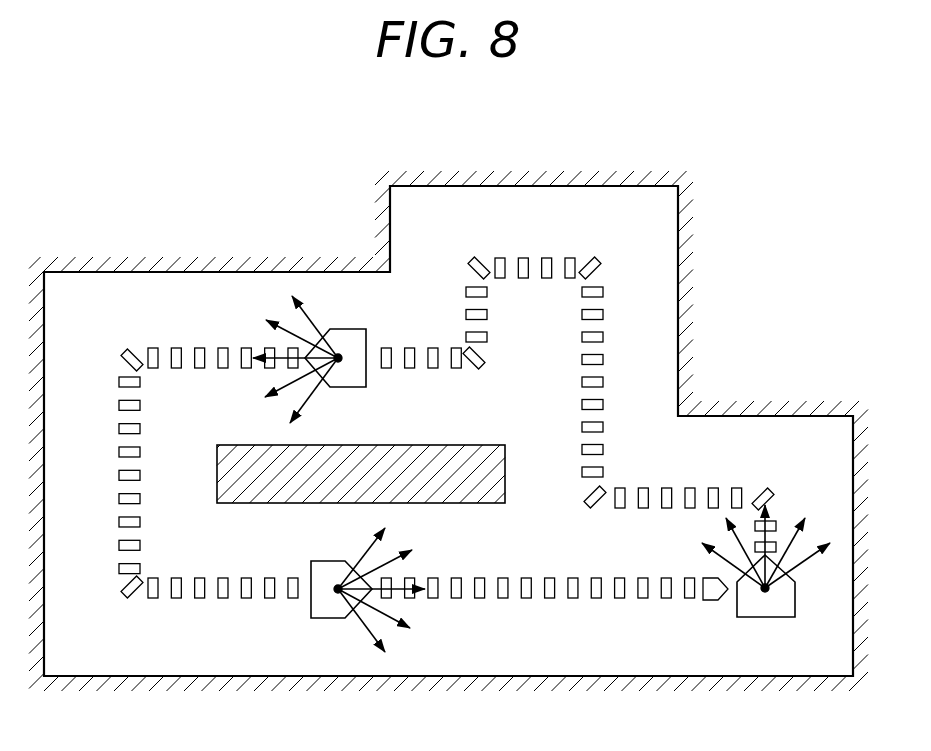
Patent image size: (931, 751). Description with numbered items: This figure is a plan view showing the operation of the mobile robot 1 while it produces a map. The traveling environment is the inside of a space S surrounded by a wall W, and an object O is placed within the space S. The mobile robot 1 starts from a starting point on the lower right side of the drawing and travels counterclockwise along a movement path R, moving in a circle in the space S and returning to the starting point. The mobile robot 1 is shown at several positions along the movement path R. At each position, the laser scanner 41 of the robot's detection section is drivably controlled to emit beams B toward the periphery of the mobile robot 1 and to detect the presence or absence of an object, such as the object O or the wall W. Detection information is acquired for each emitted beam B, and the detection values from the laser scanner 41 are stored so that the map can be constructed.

The mobile robot 1 is at (355, 329).
The laser scanner 41 is at (342, 360).
The beam B is at (312, 400).
The object O is at (468, 445).
The space S is at (648, 366).
The movement path R is at (604, 448).
The wall W is at (550, 675).